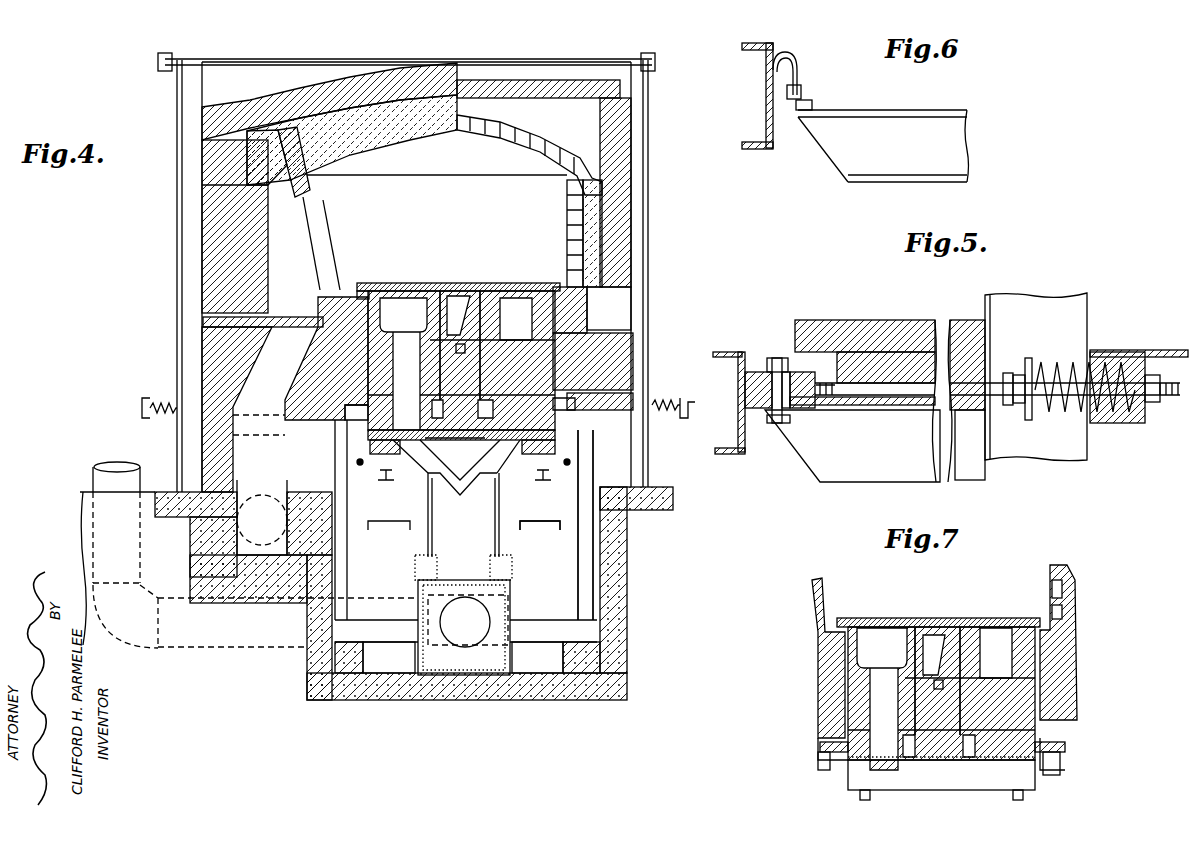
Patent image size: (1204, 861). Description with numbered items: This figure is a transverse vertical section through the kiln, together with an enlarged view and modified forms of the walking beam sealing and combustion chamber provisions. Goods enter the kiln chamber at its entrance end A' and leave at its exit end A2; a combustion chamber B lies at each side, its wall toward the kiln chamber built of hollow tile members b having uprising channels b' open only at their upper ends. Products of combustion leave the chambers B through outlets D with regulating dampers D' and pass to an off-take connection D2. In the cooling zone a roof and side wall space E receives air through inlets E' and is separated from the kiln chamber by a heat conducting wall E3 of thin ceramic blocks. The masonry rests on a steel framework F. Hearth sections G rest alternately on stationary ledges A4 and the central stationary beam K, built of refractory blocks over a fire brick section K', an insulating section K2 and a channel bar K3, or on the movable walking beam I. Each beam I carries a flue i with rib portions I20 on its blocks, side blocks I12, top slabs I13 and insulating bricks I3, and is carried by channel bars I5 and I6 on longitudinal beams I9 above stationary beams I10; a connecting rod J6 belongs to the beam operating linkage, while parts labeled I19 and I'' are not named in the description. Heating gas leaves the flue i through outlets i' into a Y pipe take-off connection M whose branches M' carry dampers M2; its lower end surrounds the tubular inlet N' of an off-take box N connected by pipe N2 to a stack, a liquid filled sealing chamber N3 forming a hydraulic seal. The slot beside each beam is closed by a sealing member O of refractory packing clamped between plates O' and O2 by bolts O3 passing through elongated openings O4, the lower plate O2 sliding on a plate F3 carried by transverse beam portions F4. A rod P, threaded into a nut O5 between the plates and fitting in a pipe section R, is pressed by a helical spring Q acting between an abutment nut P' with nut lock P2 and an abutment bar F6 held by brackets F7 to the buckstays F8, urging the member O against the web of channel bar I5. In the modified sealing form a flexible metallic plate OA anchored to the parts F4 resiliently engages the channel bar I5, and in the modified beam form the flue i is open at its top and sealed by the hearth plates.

In FIG. 4, the entrance end A' is at (329, 108).
In FIG. 4, the exit end A2 is at (500, 160).
In FIG. 4, the stationary kiln bench or ledge portion A4 is at (358, 283).
In FIG. 7, the stationary kiln bench or ledge portion A4 is at (818, 647).
In FIG. 4, the kiln chamber roof and side wall space E is at (556, 168).
In FIG. 4, the wall between space E and kiln chamber E3 is at (568, 187).
In FIG. 4, the air inlets E' is at (630, 308).
In FIG. 4, the steel framework F is at (615, 535).
In FIG. 5, the metal plate F3 is at (875, 405).
In FIG. 4, the transverse beam portions F4 is at (594, 468).
In FIG. 6, the transverse beam portions F4 is at (883, 146).
In FIG. 5, the transverse beam portions F4 is at (865, 472).
In FIG. 4, the stationary abutment bar F6 is at (150, 400).
In FIG. 5, the stationary abutment bar F6 is at (1150, 350).
In FIG. 5, the brackets F7 is at (1112, 352).
In FIG. 4, the buckstay portions F8 is at (648, 203).
In FIG. 5, the buckstay portions F8 is at (1045, 300).
In FIG. 4, the hollow tile members b is at (338, 243).
In FIG. 4, the uprising channels b' is at (350, 245).
In FIG. 4, the combustion chamber B is at (293, 242).
In FIG. 4, the hearth sections G is at (410, 283).
In FIG. 7, the hearth sections G is at (878, 618).
In FIG. 4, the walking beam I is at (461, 341).
In FIG. 7, the walking beam I is at (938, 602).
In FIG. 4, the insulating bricks I3 is at (515, 462).
In FIG. 4, the longitudinal channel bar beam I5 is at (461, 440).
In FIG. 6, the longitudinal channel bar beam I5 is at (752, 43).
In FIG. 5, the longitudinal channel bar beam I5 is at (736, 352).
In FIG. 7, the longitudinal channel bar beam I5 is at (820, 763).
In FIG. 4, the longitudinal channel bar beam I6 is at (455, 435).
In FIG. 4, the longitudinal beams I9 is at (392, 476).
In FIG. 4, the stationary beams I10 is at (542, 521).
In FIG. 4, the blocks forming sides of flue I12 is at (505, 300).
In FIG. 7, the blocks forming sides of flue I12 is at (990, 630).
In FIG. 4, the slabs forming top wall of flue I13 is at (525, 291).
In FIG. 4, the partition I19 is at (432, 291).
In FIG. 4, the longitudinal rib portions I20 is at (384, 300).
In FIG. 4, the wall block I'' is at (593, 361).
In FIG. 4, the flue or channel i is at (456, 320).
In FIG. 7, the flue or channel i is at (936, 652).
In FIG. 4, the heating gas outlets i' is at (402, 360).
In FIG. 7, the heating gas outlets i' is at (882, 705).
In FIG. 4, the stationary beam K is at (460, 323).
In FIG. 7, the stationary beam K is at (935, 654).
In FIG. 4, the subjacent beam section K' is at (456, 367).
In FIG. 7, the subjacent beam section K' is at (941, 703).
In FIG. 4, the section of insulating bricks K2 is at (460, 397).
In FIG. 7, the section of insulating bricks K2 is at (942, 747).
In FIG. 4, the channel bar K3 is at (522, 435).
In FIG. 4, the outlets D is at (282, 355).
In FIG. 4, the regulating dampers D' is at (289, 297).
In FIG. 4, the off-take connection D2 is at (262, 500).
In FIG. 4, the connecting rod J6 is at (360, 465).
In FIG. 4, the gas take-off connection M is at (461, 530).
In FIG. 4, the branches M' is at (474, 467).
In FIG. 4, the regulating damper M2 is at (416, 446).
In FIG. 4, the off-take box N is at (437, 622).
In FIG. 4, the uprising tubular pipe section N' is at (517, 538).
In FIG. 4, the pipe N2 is at (472, 605).
In FIG. 4, the sealing chamber N3 is at (512, 568).
In FIG. 4, the sealing member O is at (464, 416).
In FIG. 5, the sealing member O is at (756, 366).
In FIG. 7, the sealing member O is at (939, 777).
In FIG. 5, the upper metal plate O' is at (774, 366).
In FIG. 5, the lower metal plate O2 is at (765, 423).
In FIG. 5, the clamping bolts O3 is at (777, 423).
In FIG. 5, the openings O4 is at (803, 408).
In FIG. 5, the nut O5 is at (833, 405).
In FIG. 6, the flexible metallic plate OA is at (790, 58).
In FIG. 4, the rod P is at (689, 408).
In FIG. 5, the rod P is at (914, 416).
In FIG. 5, the abutment nut P' is at (1036, 401).
In FIG. 5, the nut lock P2 is at (1012, 405).
In FIG. 4, the helical compression spring Q is at (660, 381).
In FIG. 5, the helical compression spring Q is at (1070, 412).
In FIG. 5, the pipe section R is at (962, 408).